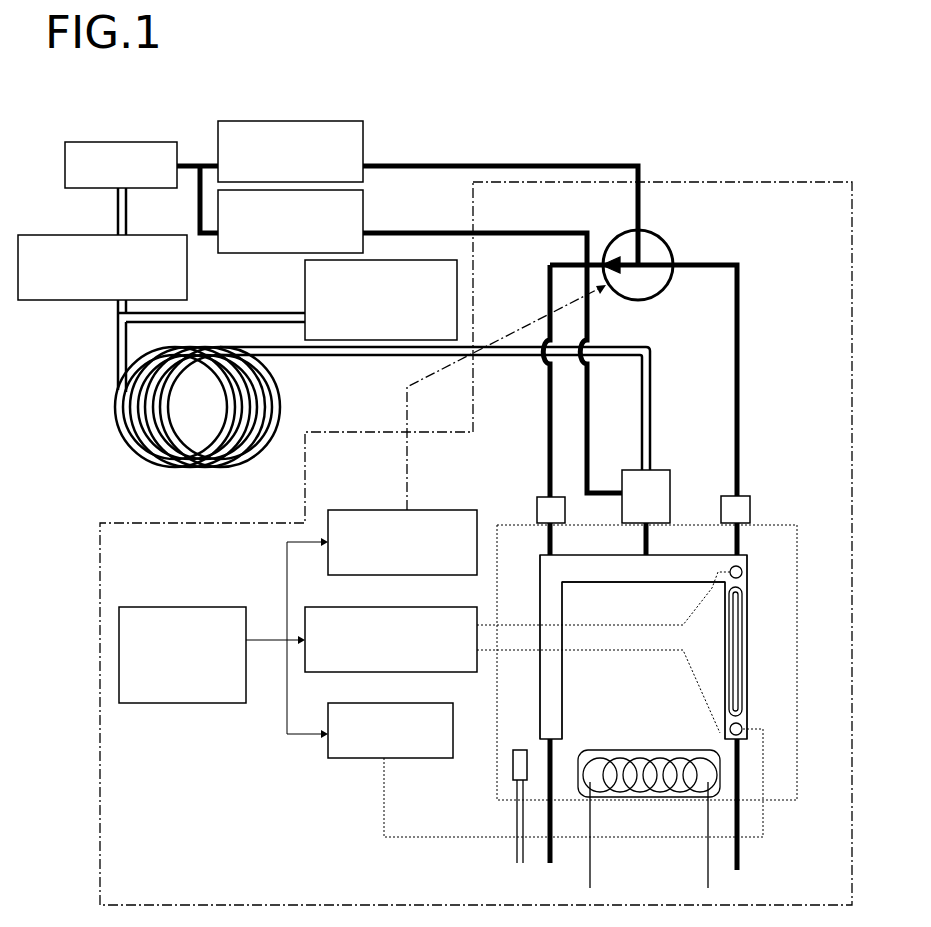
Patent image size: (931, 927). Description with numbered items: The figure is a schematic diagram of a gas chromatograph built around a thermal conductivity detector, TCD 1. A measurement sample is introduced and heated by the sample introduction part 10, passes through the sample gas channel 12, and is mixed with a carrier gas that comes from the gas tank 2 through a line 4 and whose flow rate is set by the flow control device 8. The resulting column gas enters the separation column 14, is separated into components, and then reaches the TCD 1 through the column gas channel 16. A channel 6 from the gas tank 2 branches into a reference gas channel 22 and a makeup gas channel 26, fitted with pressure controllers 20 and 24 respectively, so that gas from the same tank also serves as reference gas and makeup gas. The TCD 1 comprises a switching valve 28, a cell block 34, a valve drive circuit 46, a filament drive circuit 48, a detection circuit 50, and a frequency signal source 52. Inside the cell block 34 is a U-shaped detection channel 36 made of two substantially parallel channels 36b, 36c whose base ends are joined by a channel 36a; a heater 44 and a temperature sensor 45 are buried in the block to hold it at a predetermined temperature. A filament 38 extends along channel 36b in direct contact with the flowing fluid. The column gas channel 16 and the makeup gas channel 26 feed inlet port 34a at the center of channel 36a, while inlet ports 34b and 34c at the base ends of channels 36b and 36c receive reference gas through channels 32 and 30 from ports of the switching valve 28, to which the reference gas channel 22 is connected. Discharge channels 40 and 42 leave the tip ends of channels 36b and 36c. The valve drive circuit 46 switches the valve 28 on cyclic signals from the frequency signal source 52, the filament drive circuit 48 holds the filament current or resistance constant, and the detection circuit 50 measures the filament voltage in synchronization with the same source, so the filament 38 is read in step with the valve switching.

The TCD 1 is at (710, 182).
The gas tank 2 is at (134, 142).
The gas pipe 4 is at (115, 225).
The channel 6 is at (189, 162).
The flow control device 8 is at (152, 235).
The sample introduction part 10 is at (463, 274).
The sample gas channel 12 is at (242, 312).
The separation column 14 is at (148, 466).
The column gas channel 16 is at (652, 396).
The pressure controller 20 is at (366, 131).
The reference gas channel 22 is at (533, 162).
The pressure controller 24 is at (366, 219).
The makeup gas channel 26 is at (531, 231).
The switching valve 28 is at (664, 246).
The channel 30 is at (547, 420).
The channel 32 is at (742, 406).
The cell block 34 is at (793, 524).
The inlet port 34a is at (672, 489).
The inlet port 34b is at (749, 497).
The inlet port 34c is at (537, 497).
The detection channel 36 is at (750, 584).
The channel 36a is at (634, 572).
The channel 36b is at (745, 673).
The channel 36c is at (553, 692).
The filament 38 is at (743, 634).
The discharge channel 40 is at (745, 852).
The discharge channel 42 is at (545, 852).
The heater 44 is at (650, 790).
The temperature sensor 45 is at (512, 768).
The valve drive circuit 46 is at (440, 510).
The filament drive circuit 48 is at (444, 607).
The detection circuit 50 is at (447, 703).
The frequency signal source 52 is at (155, 607).